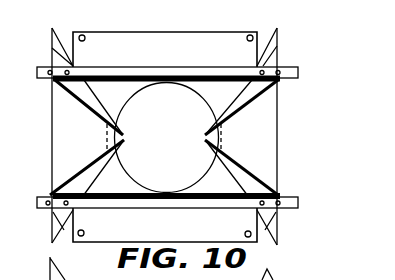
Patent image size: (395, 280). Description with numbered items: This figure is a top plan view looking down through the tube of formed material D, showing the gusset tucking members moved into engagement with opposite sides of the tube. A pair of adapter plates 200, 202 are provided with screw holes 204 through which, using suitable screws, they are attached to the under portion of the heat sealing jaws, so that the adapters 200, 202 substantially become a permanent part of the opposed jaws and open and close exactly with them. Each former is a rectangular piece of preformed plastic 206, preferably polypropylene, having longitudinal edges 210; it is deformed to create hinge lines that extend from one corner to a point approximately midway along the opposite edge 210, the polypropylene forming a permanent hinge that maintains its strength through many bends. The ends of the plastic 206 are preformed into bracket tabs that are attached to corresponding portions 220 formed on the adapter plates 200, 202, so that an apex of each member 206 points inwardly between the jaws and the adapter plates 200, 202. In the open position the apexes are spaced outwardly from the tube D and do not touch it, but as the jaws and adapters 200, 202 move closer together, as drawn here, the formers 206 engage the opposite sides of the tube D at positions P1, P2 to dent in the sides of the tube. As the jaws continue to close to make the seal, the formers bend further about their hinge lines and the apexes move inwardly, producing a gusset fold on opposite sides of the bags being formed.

The adapter plate 200 is at (157, 57).
The adapter plate 202 is at (160, 230).
The screw holes 204 is at (258, 33).
The portions formed on the adapter plates 220 is at (298, 72).
The longitudinal edges 210 is at (238, 112).
The piece of preformed plastic 206 is at (258, 150).
The tube of material D is at (191, 94).
The engagement position P1 is at (124, 135).
The engagement position P2 is at (205, 138).